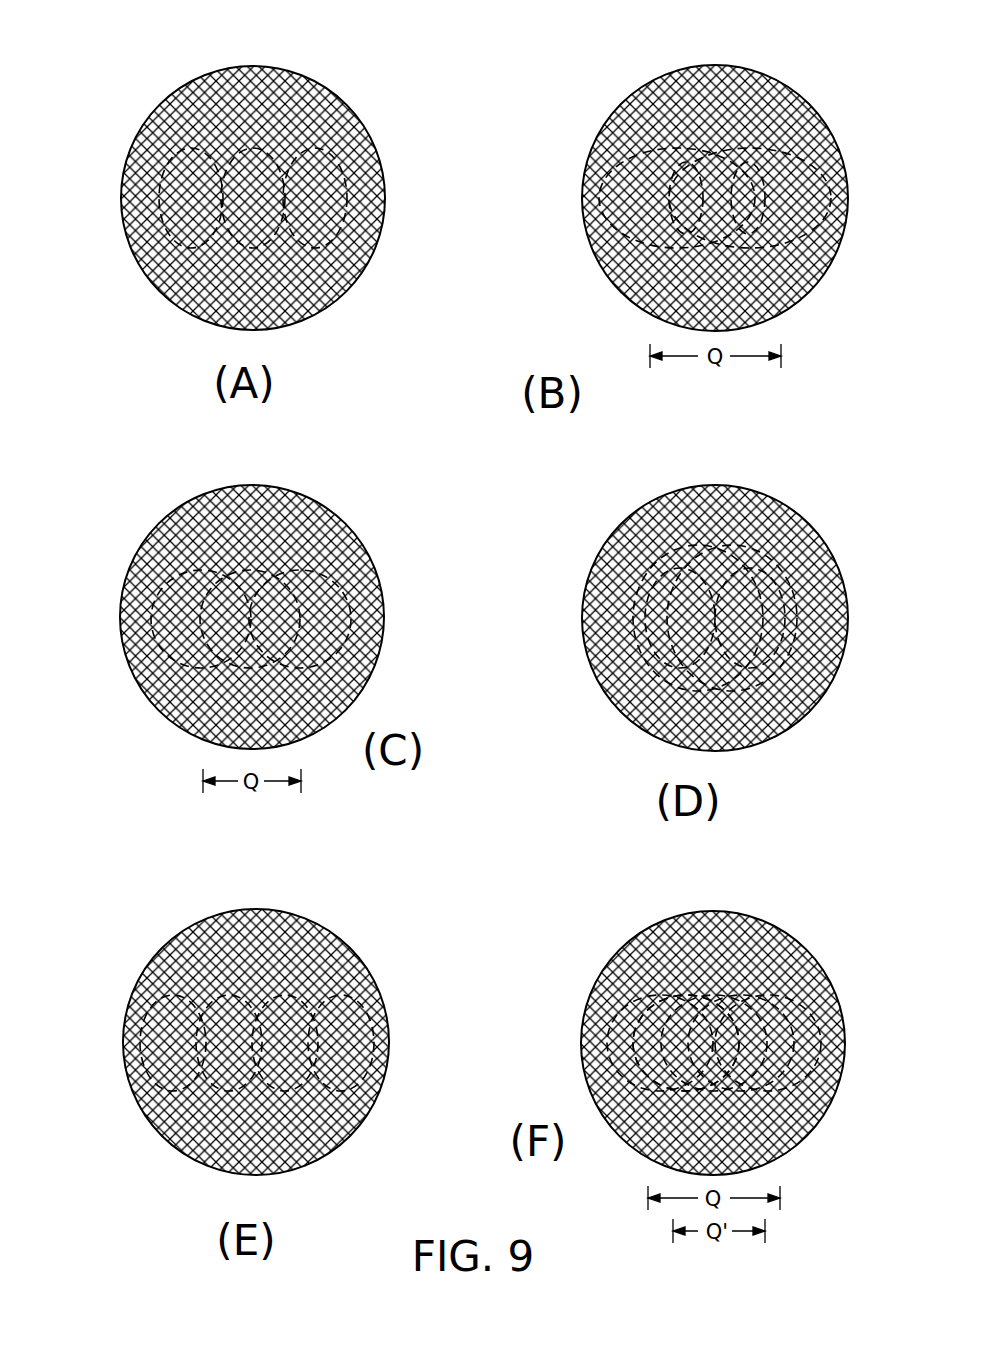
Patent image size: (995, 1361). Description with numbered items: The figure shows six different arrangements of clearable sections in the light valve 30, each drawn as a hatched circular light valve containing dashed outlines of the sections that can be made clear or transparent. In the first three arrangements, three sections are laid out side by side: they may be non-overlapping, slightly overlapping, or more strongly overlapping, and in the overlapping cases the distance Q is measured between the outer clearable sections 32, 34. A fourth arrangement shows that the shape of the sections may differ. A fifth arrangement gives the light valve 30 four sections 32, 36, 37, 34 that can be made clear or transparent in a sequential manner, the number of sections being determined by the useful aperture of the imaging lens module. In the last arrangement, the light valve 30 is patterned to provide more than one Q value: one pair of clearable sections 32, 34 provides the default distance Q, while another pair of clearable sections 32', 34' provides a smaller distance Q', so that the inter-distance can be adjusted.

The light valve 30 is at (310, 71).
The clearable section 32 is at (556, 646).
The clearable section 34 is at (415, 576).
The clearable section 36 is at (238, 140).
The clearable section 37 is at (210, 990).
The clearable section 32' is at (742, 983).
The clearable section 34' is at (666, 996).